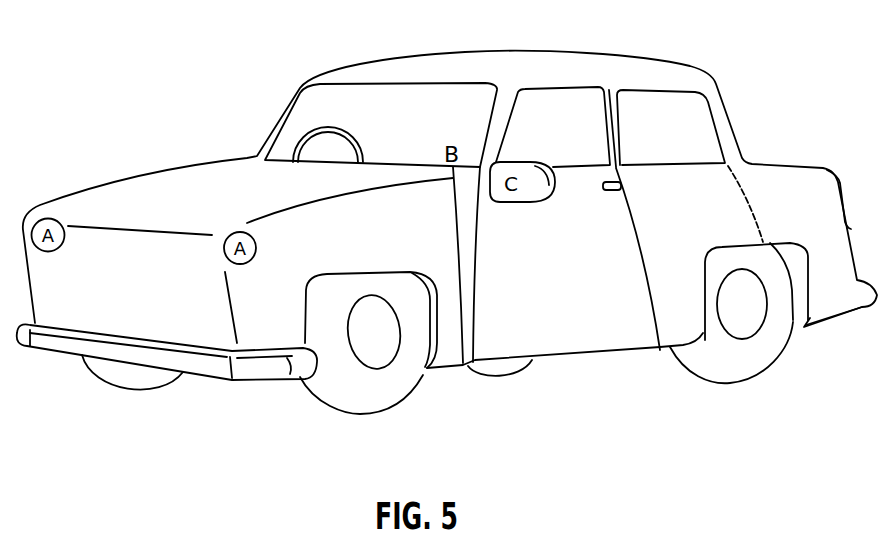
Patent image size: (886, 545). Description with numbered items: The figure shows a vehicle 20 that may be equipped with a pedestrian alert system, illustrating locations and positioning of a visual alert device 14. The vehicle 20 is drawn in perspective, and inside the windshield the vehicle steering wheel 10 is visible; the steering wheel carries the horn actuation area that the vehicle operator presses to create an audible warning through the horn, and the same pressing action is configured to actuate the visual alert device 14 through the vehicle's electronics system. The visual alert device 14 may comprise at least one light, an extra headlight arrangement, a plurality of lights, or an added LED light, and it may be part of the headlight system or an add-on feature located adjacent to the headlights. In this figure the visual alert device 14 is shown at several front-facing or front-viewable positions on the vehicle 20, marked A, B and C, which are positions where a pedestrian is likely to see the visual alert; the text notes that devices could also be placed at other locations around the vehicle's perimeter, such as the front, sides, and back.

The vehicle steering wheel 10 is at (330, 153).
The vehicle 20 is at (155, 180).
The visual alert device 14 is at (265, 305).